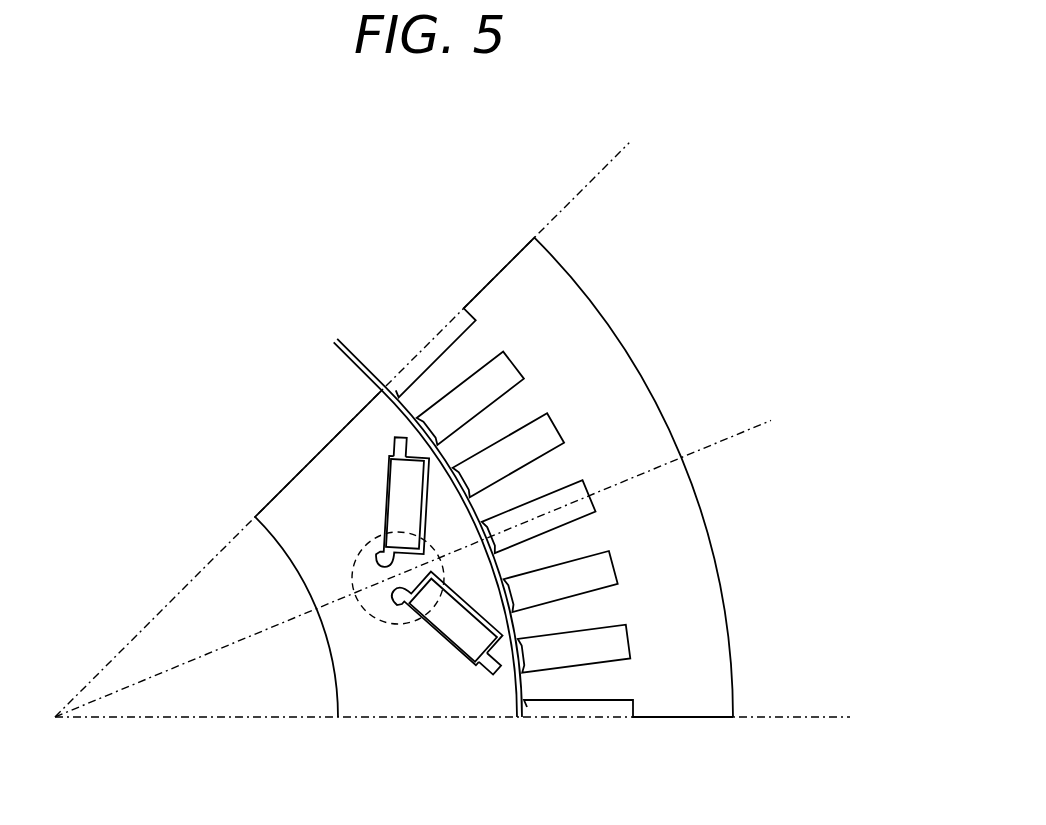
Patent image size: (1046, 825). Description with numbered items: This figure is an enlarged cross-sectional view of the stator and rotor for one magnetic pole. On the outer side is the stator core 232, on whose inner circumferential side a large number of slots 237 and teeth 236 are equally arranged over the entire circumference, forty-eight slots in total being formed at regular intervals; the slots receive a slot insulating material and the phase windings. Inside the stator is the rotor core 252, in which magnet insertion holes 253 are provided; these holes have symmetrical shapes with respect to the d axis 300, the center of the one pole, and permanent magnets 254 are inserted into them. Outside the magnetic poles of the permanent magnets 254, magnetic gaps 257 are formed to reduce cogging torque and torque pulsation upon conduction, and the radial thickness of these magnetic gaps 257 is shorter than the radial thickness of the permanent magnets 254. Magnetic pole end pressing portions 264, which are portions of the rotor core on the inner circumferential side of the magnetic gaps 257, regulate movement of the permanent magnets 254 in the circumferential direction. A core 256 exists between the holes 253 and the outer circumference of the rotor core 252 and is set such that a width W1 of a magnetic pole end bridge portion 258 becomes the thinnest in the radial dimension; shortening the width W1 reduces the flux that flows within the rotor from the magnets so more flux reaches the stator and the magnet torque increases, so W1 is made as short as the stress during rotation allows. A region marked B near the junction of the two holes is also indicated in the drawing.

The stator core 232 is at (690, 488).
The tooth 236 is at (513, 410).
The slot 237 is at (506, 378).
The rotor core 252 is at (278, 517).
The magnet insertion hole 253 is at (385, 498).
The permanent magnet 254 is at (400, 484).
The core 256 is at (450, 527).
The magnetic gap 257 is at (397, 449).
The magnetic pole end bridge portion 258 is at (426, 452).
The magnetic pole end pressing portion 264 is at (400, 447).
The d axis 300 is at (742, 432).
The region B is at (358, 572).
The width of the magnetic pole end bridge portion W1 is at (346, 323).